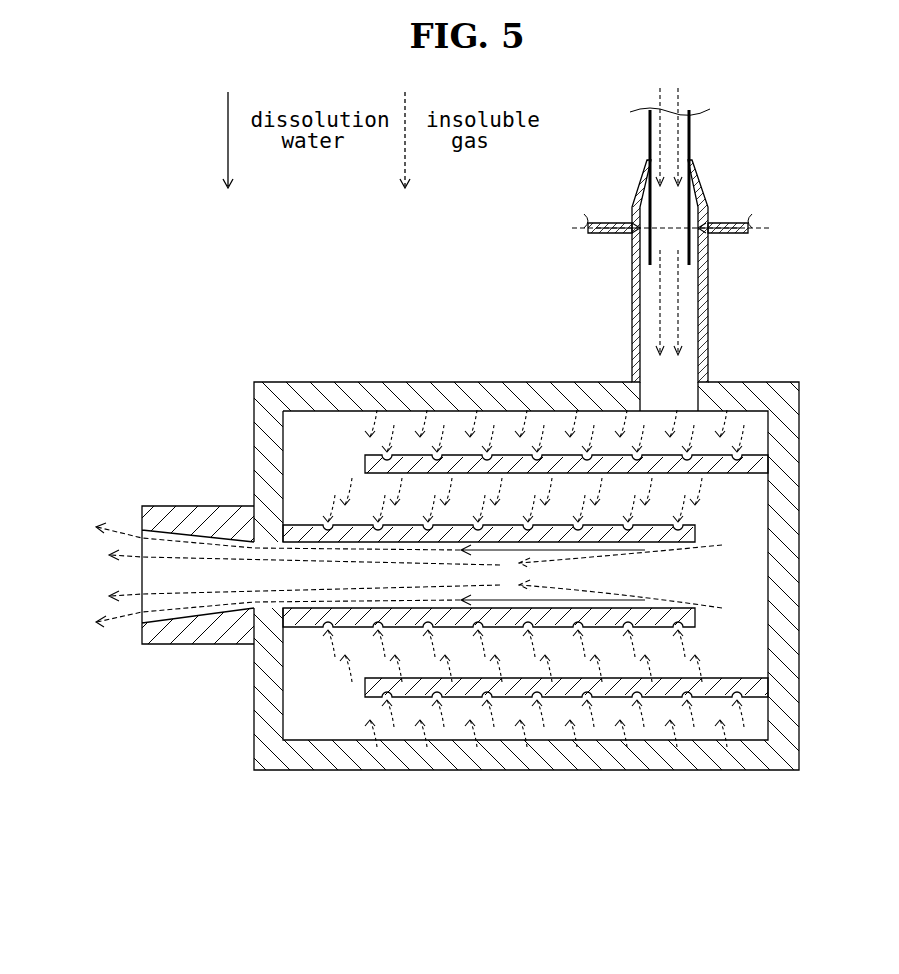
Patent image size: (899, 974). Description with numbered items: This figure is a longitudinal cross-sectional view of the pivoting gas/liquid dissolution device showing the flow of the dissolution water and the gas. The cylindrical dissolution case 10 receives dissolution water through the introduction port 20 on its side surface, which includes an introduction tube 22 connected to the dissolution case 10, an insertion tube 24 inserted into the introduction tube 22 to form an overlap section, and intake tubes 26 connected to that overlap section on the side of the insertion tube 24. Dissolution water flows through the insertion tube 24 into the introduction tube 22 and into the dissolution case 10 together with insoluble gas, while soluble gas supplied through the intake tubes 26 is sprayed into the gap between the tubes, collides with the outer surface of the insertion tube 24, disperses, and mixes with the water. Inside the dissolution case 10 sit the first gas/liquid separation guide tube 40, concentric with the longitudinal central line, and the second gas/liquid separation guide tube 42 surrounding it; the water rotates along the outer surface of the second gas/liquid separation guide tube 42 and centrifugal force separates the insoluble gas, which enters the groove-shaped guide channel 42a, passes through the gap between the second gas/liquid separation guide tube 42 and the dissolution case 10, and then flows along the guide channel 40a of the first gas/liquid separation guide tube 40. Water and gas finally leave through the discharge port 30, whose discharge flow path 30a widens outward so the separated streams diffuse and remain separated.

The dissolution case 10 is at (540, 770).
The introduction port 20 is at (717, 235).
The introduction tube 22 is at (708, 322).
The insertion tube 24 is at (690, 138).
The intake tube 26 is at (728, 223).
The discharge port 30 is at (205, 645).
The discharge flow path 30a is at (172, 580).
The first gas/liquid separation guide tube 40 is at (348, 522).
The guide channel 40a is at (325, 522).
The second gas/liquid separation guide tube 42 is at (727, 458).
The guide channel 42a is at (520, 455).